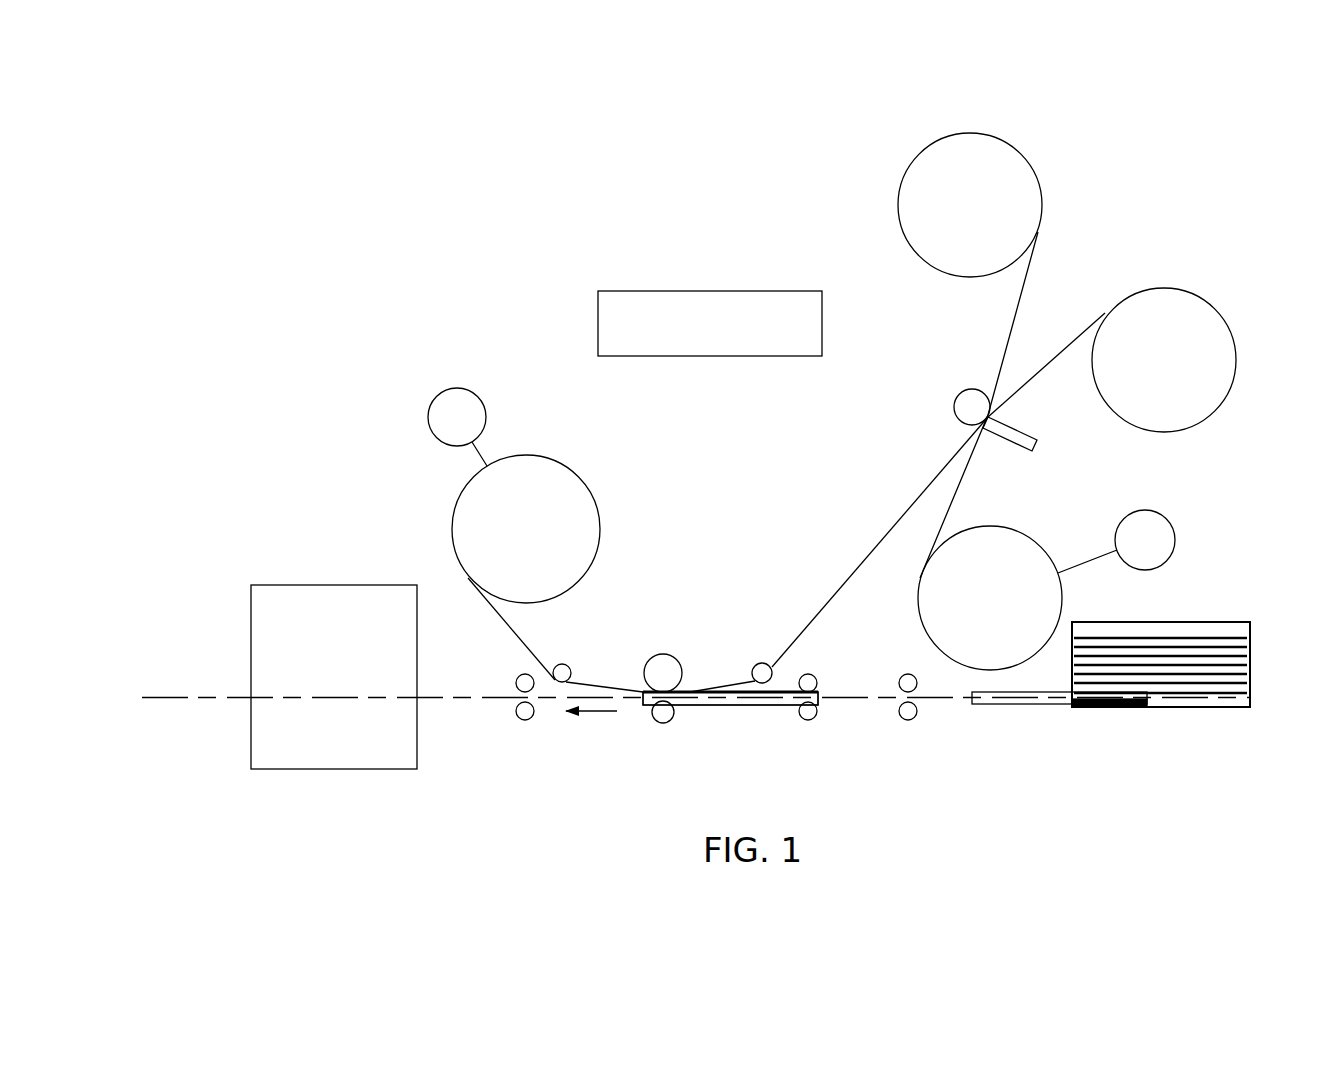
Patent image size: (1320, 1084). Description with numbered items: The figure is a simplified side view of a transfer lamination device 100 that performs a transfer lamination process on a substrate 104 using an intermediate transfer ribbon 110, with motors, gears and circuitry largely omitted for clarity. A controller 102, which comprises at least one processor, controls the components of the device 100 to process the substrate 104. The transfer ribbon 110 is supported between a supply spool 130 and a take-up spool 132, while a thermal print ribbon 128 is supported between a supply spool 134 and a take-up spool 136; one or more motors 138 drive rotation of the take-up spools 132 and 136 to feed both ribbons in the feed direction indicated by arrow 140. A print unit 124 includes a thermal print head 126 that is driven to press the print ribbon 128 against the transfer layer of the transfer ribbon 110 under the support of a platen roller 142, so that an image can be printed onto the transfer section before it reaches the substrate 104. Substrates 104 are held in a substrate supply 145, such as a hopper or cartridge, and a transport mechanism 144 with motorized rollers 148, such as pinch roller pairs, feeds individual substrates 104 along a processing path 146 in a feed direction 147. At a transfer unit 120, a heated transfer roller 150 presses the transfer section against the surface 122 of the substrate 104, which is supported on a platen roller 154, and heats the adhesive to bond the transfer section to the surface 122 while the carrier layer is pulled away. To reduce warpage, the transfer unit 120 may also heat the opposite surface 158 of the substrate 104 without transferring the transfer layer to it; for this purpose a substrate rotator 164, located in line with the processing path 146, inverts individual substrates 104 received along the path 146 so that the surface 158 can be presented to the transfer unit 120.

The transfer lamination device 100 is at (577, 212).
The controller 102 is at (634, 291).
The substrate 104 is at (1128, 636).
The transfer ribbon 110 is at (866, 557).
The transfer unit 120 is at (636, 627).
The surface 122 is at (784, 687).
The print unit 124 is at (1200, 478).
The thermal print head 126 is at (1032, 452).
The thermal print ribbon 128 is at (1037, 375).
The supply spool 130 is at (905, 191).
The take-up spool 132 is at (567, 488).
The supply spool 134 is at (1220, 400).
The take-up spool 136 is at (1016, 539).
The motor 138 is at (440, 396).
The feed direction 140 is at (940, 489).
The platen roller 142 is at (961, 401).
The transport mechanism 144 is at (948, 730).
The substrate supply 145 is at (1208, 621).
The processing path 146 is at (177, 700).
The feed direction 147 is at (590, 713).
The motorized rollers 148 is at (525, 720).
The heated transfer roller 150 is at (668, 654).
The platen roller 154 is at (663, 723).
The surface 158 is at (740, 705).
The substrate rotator 164 is at (267, 585).